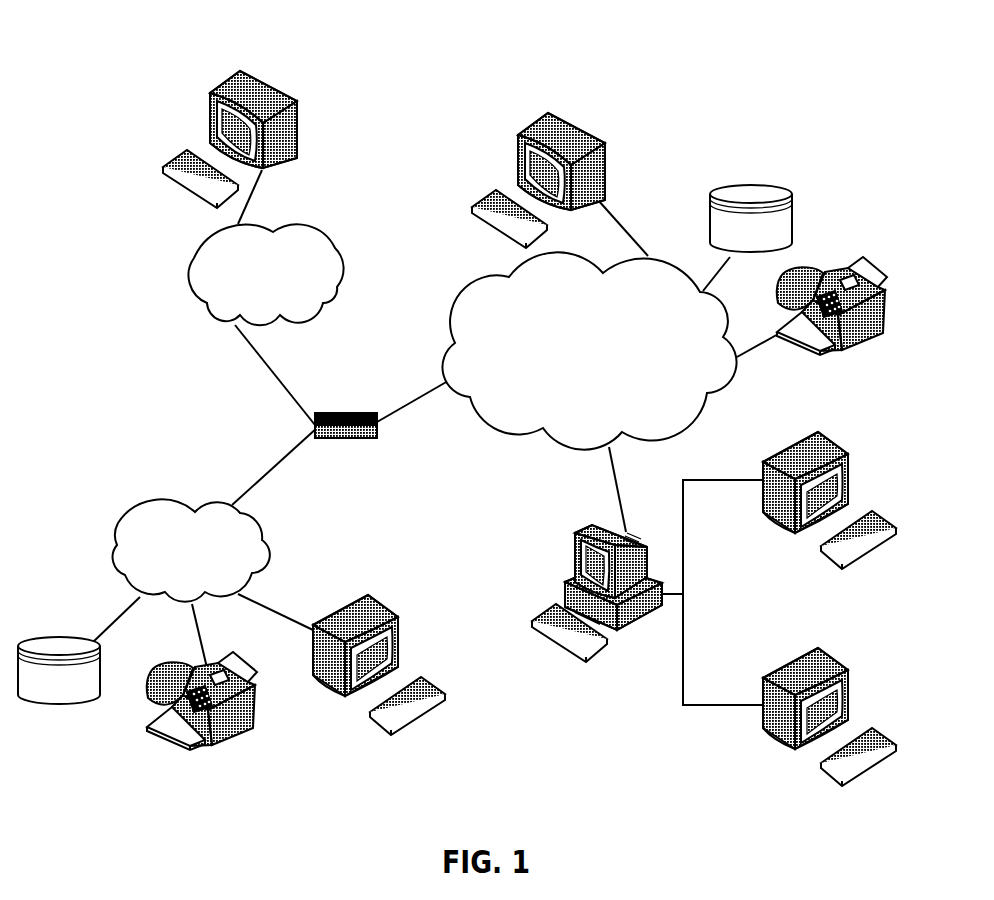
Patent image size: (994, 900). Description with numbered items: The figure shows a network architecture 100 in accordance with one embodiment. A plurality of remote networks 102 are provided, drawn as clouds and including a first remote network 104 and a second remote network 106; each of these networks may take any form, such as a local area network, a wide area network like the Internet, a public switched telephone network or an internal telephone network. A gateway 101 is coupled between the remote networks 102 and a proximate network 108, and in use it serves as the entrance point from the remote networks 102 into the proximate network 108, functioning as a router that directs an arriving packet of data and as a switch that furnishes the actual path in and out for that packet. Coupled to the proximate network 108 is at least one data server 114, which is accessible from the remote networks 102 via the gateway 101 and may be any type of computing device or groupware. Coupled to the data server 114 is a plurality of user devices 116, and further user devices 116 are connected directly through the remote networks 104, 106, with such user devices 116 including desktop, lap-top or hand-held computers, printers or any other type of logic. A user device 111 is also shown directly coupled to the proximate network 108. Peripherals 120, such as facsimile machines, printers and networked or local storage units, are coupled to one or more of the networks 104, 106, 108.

The architecture 100 is at (135, 50).
The gateway 101 is at (331, 413).
The remote networks 102 is at (162, 334).
The first remote network 104 is at (112, 526).
The second remote network 106 is at (344, 244).
The proximate network 108 is at (703, 418).
The user device 111 is at (607, 148).
The data server 114 is at (576, 547).
The user devices 116 is at (298, 112).
The peripheral 120 is at (60, 705).